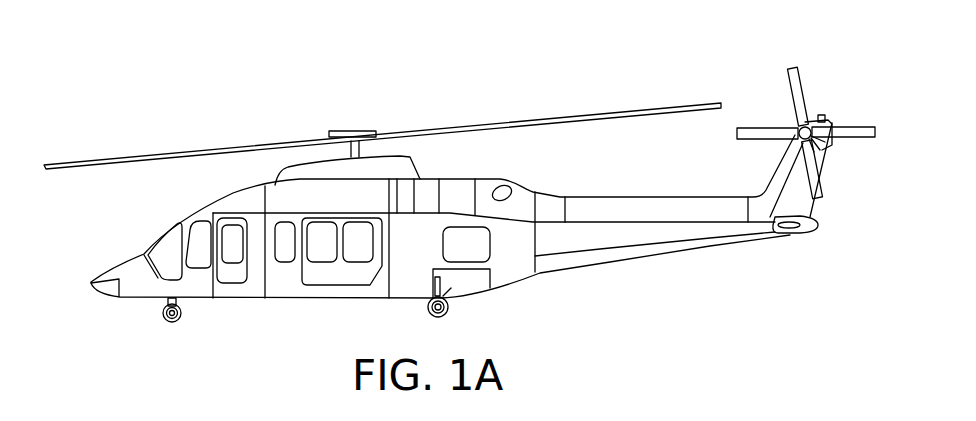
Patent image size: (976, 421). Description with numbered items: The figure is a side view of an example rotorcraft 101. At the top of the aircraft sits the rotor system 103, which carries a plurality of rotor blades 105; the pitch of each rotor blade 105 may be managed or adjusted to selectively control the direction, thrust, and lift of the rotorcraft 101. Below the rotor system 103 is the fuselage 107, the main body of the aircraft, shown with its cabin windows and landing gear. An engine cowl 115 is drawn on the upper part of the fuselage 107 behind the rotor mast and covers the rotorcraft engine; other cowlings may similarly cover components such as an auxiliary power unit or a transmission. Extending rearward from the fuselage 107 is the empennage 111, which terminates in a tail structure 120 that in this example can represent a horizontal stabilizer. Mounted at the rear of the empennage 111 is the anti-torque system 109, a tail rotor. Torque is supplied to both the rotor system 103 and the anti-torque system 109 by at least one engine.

The rotorcraft 101 is at (234, 66).
The rotor system 103 is at (368, 108).
The rotor blade 105 is at (187, 150).
The fuselage 107 is at (285, 299).
The anti-torque system 109 is at (830, 98).
The empennage 111 is at (673, 257).
The engine cowl 115 is at (455, 190).
The tail structure 120 is at (790, 229).